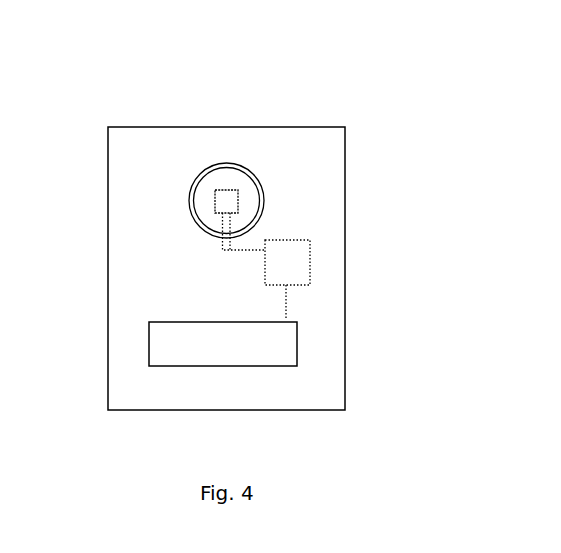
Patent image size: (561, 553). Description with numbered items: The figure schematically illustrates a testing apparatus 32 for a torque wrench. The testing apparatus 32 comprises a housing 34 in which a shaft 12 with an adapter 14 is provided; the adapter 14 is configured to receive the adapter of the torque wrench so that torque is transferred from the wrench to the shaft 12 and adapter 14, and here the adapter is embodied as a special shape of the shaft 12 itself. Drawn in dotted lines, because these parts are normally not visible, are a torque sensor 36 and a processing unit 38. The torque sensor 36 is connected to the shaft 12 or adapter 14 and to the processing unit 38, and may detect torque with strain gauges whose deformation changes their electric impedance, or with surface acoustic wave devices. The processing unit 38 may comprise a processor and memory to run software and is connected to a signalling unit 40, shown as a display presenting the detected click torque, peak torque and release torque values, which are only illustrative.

The testing apparatus 32 is at (151, 101).
The housing 34 is at (287, 127).
The torque sensor 36 is at (223, 237).
The shaft 12 is at (332, 193).
The adapter 14 is at (239, 207).
The processing unit 38 is at (309, 268).
The signalling unit 40 is at (280, 366).